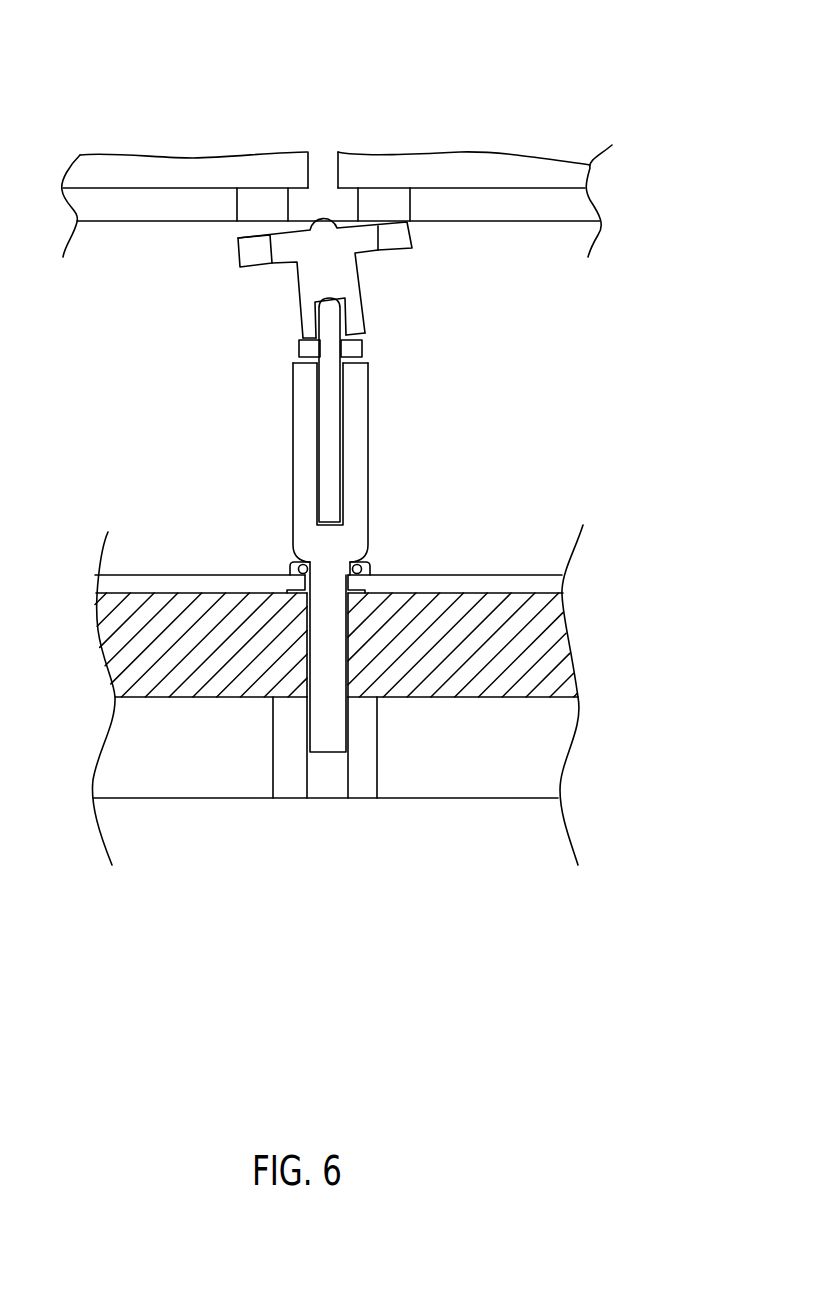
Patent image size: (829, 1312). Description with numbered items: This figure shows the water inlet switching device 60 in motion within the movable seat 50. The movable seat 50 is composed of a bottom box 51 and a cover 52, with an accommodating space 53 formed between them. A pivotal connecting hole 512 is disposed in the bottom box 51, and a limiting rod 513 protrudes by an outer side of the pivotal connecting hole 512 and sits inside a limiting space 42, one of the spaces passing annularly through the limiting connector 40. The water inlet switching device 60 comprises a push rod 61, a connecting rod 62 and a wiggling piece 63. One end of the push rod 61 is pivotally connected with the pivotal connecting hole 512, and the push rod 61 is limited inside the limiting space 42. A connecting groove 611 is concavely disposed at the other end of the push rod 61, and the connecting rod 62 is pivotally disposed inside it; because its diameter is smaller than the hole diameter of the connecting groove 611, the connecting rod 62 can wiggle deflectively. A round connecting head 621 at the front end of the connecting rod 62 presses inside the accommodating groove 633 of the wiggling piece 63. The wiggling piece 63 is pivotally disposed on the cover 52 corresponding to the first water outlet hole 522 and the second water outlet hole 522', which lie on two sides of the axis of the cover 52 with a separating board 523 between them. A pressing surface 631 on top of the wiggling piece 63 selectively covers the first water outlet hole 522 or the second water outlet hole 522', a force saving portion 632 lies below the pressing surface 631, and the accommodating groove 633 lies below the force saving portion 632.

The limiting connector 40 is at (393, 775).
The limiting space 42 is at (363, 778).
The movable seat 50 is at (390, 680).
The bottom box 51 is at (560, 668).
The pivotal connecting hole 512 is at (303, 610).
The limiting rod 513 is at (318, 777).
The cover 52 is at (337, 135).
The first water outlet hole 522 is at (405, 140).
The second water outlet hole 522' is at (264, 136).
The separating board 523 is at (317, 150).
The accommodating space 53 is at (542, 460).
The water inlet switching device 60 is at (318, 485).
The push rod 61 is at (329, 546).
The connecting groove 611 is at (317, 422).
The connecting rod 62 is at (329, 410).
The connecting head 621 is at (316, 300).
The wiggling piece 63 is at (318, 278).
The pressing surface 631 is at (243, 250).
The force saving portion 632 is at (297, 288).
The accommodating groove 633 is at (365, 333).